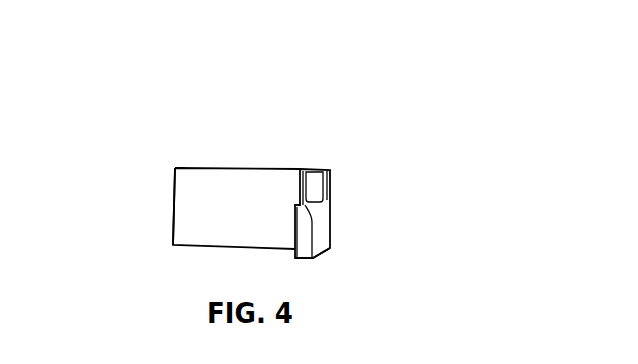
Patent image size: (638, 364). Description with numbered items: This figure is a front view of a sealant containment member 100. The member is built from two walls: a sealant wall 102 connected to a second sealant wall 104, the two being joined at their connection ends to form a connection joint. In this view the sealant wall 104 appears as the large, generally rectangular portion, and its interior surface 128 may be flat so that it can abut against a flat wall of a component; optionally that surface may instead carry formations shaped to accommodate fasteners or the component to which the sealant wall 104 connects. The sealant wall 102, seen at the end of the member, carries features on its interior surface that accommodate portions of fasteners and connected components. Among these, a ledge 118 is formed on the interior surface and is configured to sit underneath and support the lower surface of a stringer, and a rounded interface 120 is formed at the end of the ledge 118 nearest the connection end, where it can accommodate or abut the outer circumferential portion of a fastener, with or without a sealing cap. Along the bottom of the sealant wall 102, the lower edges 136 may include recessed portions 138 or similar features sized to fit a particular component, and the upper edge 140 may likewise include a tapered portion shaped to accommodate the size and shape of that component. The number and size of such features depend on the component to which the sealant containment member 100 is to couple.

The sealant containment member 100 is at (188, 103).
The sealant wall 102 is at (332, 190).
The sealant wall 104 is at (173, 203).
The ledge 118 is at (327, 200).
The rounded interface 120 is at (315, 178).
The interior surface 128 is at (238, 180).
The lower edges 136 is at (317, 258).
The recessed portions 138 is at (323, 253).
The upper edge 140 is at (185, 167).